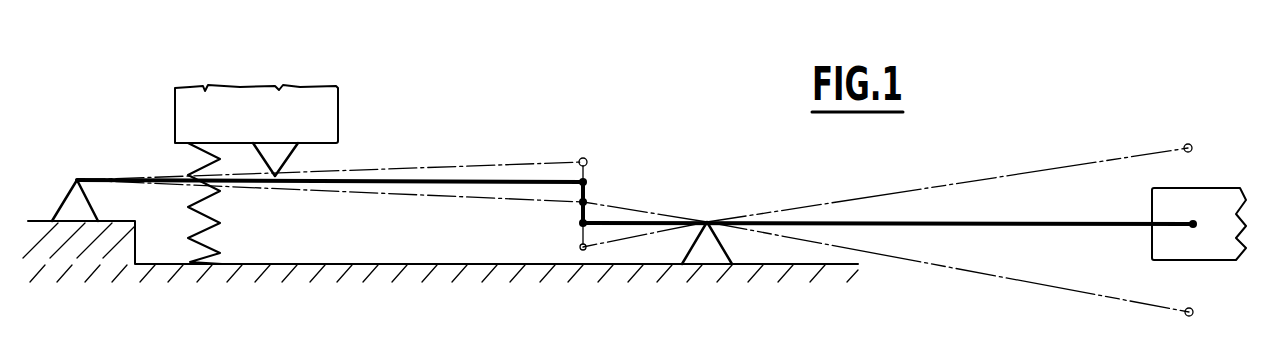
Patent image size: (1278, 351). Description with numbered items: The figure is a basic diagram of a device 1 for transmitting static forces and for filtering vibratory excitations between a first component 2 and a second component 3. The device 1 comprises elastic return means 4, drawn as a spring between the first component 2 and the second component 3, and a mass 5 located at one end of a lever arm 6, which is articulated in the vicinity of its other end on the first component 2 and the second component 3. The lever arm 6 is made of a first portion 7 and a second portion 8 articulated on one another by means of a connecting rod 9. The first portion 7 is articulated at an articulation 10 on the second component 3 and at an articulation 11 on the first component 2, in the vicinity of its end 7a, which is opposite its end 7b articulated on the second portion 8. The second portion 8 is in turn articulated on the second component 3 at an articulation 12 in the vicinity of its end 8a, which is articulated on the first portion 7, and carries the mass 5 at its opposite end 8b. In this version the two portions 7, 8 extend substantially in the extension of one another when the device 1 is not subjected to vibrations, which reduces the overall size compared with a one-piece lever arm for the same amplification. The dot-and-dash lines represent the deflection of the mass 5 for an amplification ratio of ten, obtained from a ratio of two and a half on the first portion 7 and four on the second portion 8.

The device 1 is at (414, 130).
The first component 2 is at (187, 102).
The second component 3 is at (322, 263).
The elastic return means 4 is at (190, 214).
The mass 5 is at (1160, 207).
The lever arm 6 is at (642, 143).
The first portion 7 is at (421, 183).
The end of first portion 7a is at (70, 190).
The end of first portion 7b is at (588, 178).
The second portion 8 is at (1025, 221).
The end of second portion 8a is at (580, 223).
The end of second portion 8b is at (1196, 222).
The connecting rod 9 is at (588, 193).
The articulation 10 is at (88, 192).
The articulation 11 is at (276, 178).
The articulation 12 is at (699, 234).